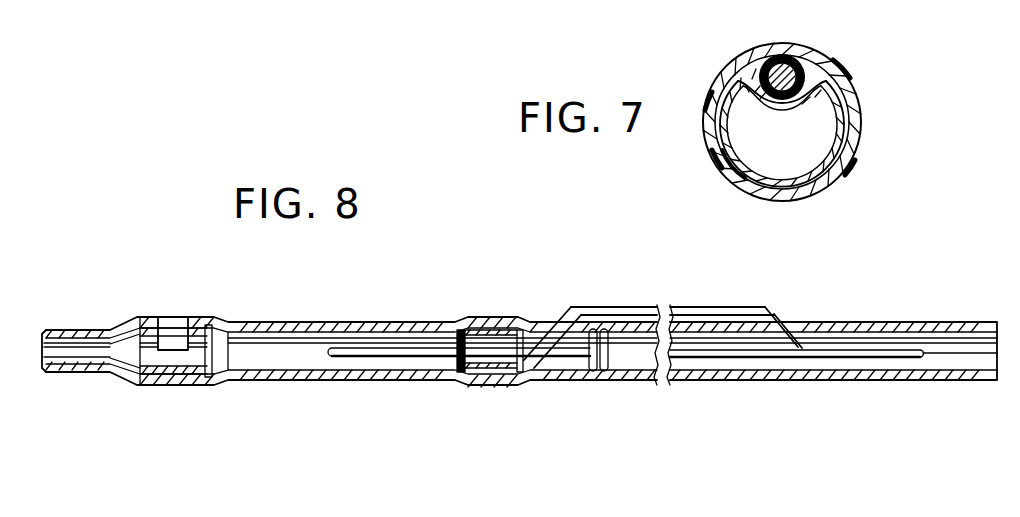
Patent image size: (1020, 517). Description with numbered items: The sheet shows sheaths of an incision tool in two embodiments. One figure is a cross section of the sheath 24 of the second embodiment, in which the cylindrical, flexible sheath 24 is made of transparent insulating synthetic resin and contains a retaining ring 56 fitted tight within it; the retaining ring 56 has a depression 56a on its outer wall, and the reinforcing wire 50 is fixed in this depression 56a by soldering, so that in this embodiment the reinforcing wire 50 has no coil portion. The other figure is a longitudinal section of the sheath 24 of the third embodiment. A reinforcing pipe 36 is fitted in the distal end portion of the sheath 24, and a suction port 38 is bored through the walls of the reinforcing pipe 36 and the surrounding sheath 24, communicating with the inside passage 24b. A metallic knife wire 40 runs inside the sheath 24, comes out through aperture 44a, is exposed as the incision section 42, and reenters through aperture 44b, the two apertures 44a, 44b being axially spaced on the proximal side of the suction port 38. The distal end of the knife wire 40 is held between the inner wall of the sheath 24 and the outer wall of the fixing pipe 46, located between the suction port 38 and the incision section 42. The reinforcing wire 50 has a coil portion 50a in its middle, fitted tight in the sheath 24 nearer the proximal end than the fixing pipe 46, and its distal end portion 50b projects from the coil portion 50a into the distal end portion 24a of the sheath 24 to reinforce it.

In FIG. 7, the sheath 24 is at (855, 113).
In FIG. 8, the sheath 24 is at (948, 380).
In FIG. 8, the distal end portion 24a is at (280, 315).
In FIG. 8, the inside passage 24b is at (285, 360).
In FIG. 8, the reinforcing pipe 36 is at (190, 360).
In FIG. 8, the suction port 38 is at (172, 335).
In FIG. 8, the knife wire 40 is at (712, 315).
In FIG. 8, the incision section 42 is at (641, 306).
In FIG. 8, the aperture 44a is at (785, 325).
In FIG. 8, the aperture 44b is at (557, 328).
In FIG. 8, the fixing pipe 46 is at (489, 330).
In FIG. 7, the reinforcing wire 50 is at (799, 47).
In FIG. 8, the reinforcing wire 50 is at (720, 352).
In FIG. 8, the coil portion 50a is at (594, 372).
In FIG. 8, the distal end portion 50b is at (372, 352).
In FIG. 7, the retaining ring 56 is at (836, 170).
In FIG. 7, the depression 56a is at (830, 80).